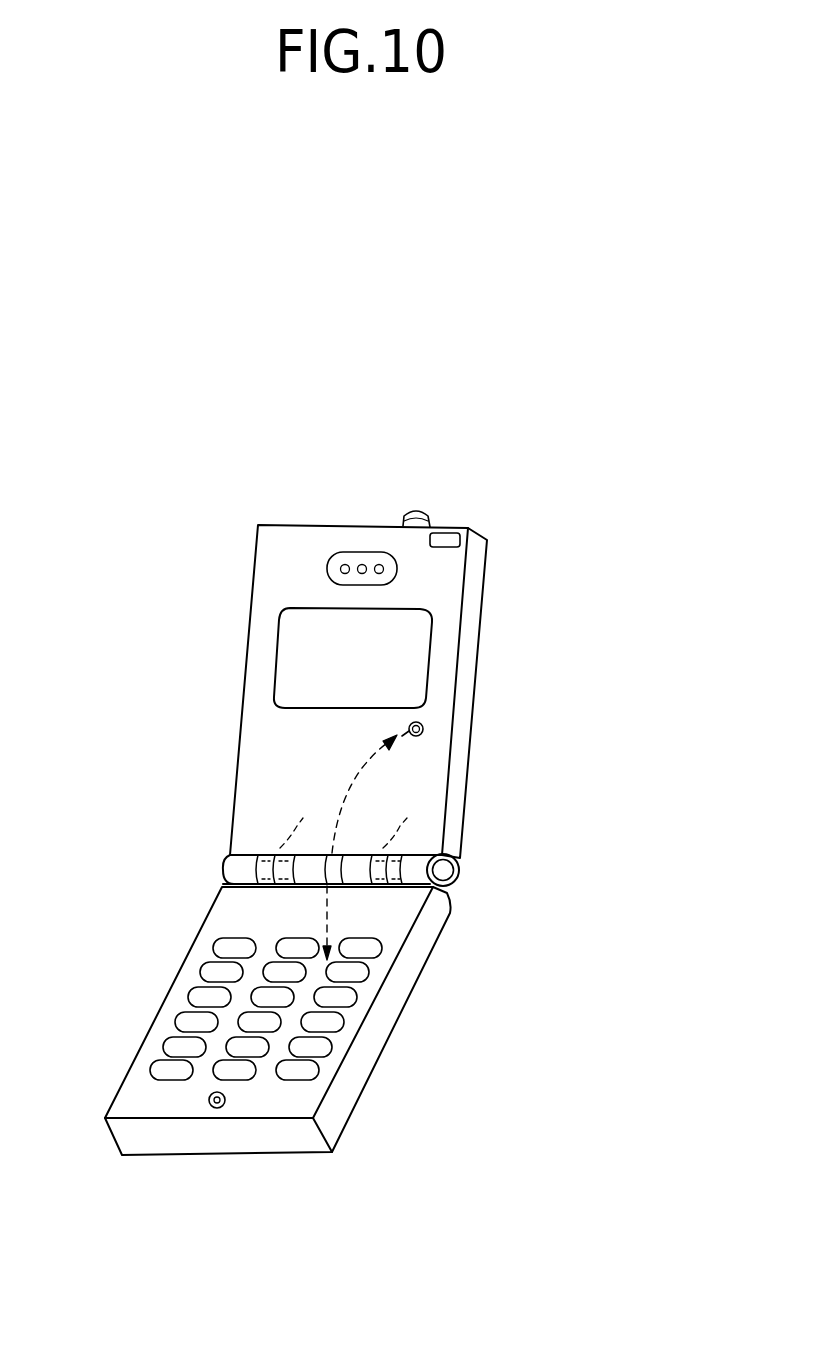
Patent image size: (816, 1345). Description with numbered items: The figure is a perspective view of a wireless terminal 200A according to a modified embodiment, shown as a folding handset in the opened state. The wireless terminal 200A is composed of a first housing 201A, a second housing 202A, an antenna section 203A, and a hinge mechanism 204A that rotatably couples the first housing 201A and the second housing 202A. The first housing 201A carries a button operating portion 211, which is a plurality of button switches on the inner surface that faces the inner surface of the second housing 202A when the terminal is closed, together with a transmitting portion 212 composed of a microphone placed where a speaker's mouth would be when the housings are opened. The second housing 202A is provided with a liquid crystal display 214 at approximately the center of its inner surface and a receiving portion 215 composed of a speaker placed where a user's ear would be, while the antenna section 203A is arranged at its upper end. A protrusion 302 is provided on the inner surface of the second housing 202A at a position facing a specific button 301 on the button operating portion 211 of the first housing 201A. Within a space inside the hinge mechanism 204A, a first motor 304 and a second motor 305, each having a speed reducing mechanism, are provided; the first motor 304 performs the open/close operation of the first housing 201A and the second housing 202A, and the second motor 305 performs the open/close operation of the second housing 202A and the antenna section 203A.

The wireless terminal 200A is at (160, 744).
The first housing 201A is at (147, 1045).
The second housing 202A is at (249, 660).
The antenna section 203A is at (433, 513).
The hinge mechanism 204A is at (236, 865).
The button operating portion 211 is at (255, 923).
The transmitting portion 212 is at (209, 1100).
The liquid crystal display (LCD) 214 is at (318, 712).
The receiving portion 215 is at (327, 568).
The specific button 301 is at (347, 970).
The protrusion 302 is at (426, 727).
The first motor 304 is at (300, 818).
The second motor 305 is at (402, 818).